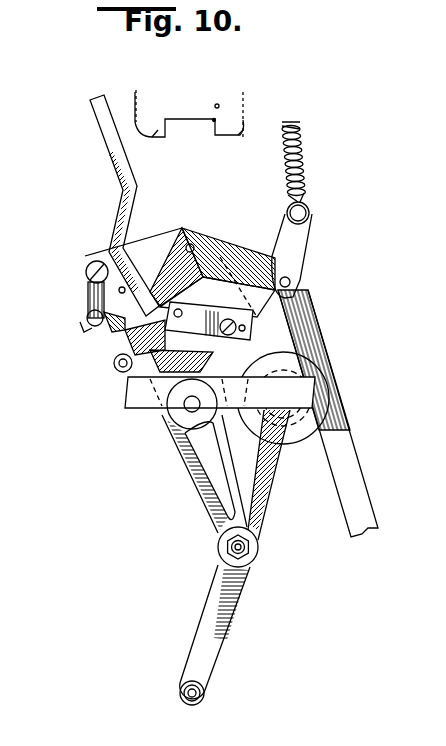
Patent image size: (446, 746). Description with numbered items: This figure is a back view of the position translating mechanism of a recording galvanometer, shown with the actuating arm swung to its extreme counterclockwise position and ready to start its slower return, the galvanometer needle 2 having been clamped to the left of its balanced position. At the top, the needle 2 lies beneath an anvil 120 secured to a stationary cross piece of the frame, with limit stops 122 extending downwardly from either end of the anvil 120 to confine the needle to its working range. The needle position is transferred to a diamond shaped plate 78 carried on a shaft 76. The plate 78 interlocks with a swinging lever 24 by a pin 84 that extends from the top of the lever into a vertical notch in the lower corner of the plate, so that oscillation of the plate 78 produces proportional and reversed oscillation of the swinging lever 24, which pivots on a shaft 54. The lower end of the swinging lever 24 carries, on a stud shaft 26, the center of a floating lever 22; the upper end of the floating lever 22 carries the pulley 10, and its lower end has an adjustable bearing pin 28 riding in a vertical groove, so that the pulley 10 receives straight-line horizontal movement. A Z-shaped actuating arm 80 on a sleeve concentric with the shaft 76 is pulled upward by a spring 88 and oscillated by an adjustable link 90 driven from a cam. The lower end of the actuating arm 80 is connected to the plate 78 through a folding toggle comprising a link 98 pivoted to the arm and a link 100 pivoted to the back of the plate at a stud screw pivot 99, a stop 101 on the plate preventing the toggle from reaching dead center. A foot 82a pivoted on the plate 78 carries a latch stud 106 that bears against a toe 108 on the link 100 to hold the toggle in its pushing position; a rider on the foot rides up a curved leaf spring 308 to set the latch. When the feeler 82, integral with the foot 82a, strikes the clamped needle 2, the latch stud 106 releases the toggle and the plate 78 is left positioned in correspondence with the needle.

The needle 2 is at (213, 122).
The pulley 10 is at (310, 440).
The floating lever 22 is at (206, 607).
The swinging lever 24 is at (183, 474).
The stud shaft 26 is at (256, 547).
The adjustable bearing pin 28 is at (200, 693).
The shaft 54 is at (190, 405).
The shaft 76 is at (190, 244).
The diamond shaped plate 78 is at (240, 302).
The actuating arm 80 is at (238, 256).
The feeler 82 is at (128, 196).
The foot 82a is at (130, 347).
The pin 84 is at (178, 342).
The spring 88 is at (306, 147).
The adjustable link 90 is at (300, 322).
The link 98 is at (120, 320).
The stud screw pivot 99 is at (93, 264).
The link 100 is at (88, 295).
The stop 101 is at (124, 287).
The latch stud 106 is at (114, 366).
The toe 108 is at (80, 326).
The anvil 120 is at (245, 97).
The limit stops 122 is at (153, 134).
The curved leaf spring 308 is at (150, 386).